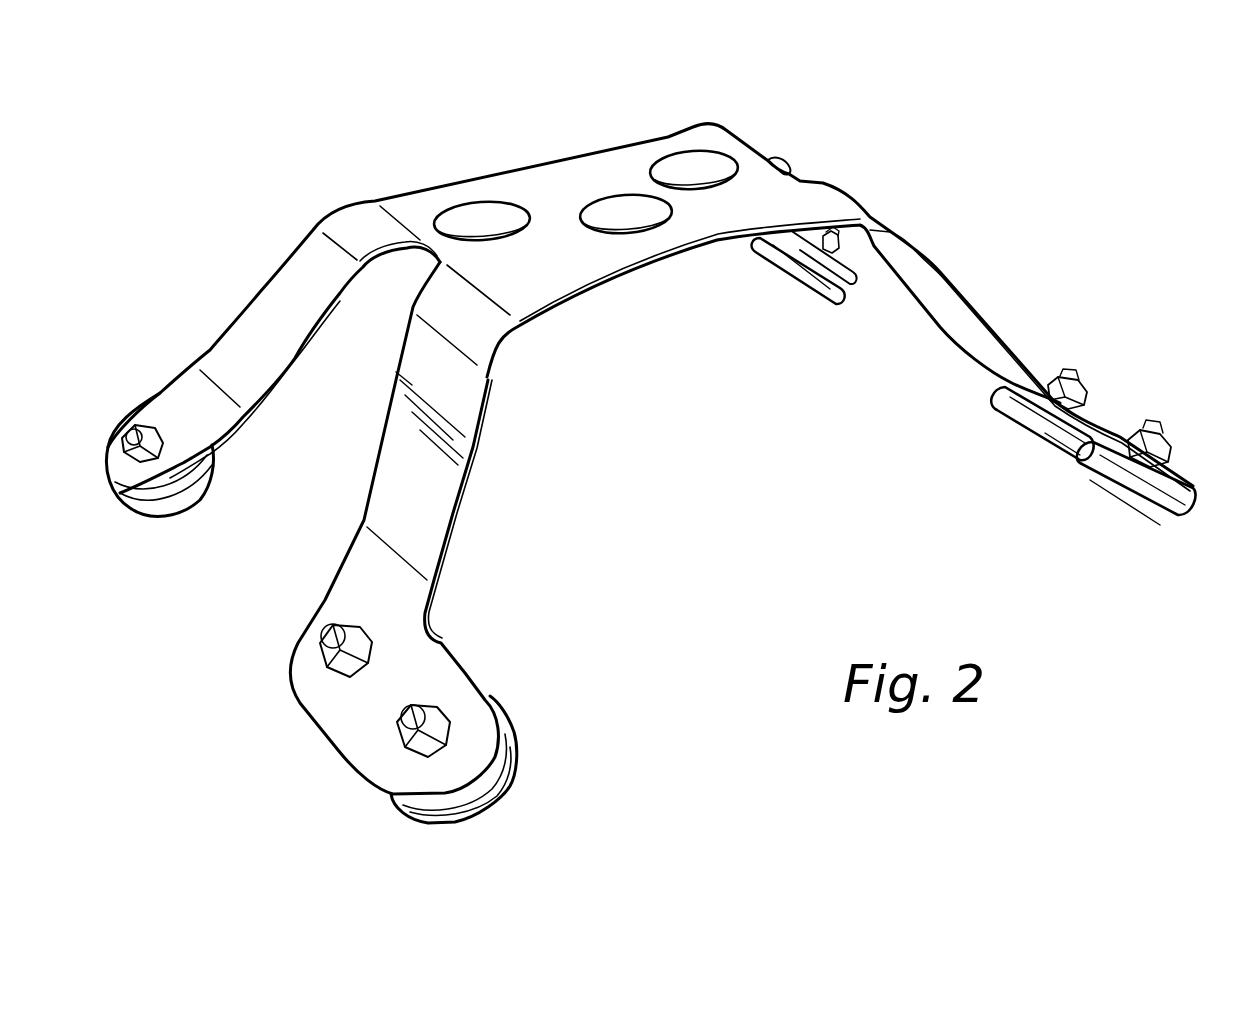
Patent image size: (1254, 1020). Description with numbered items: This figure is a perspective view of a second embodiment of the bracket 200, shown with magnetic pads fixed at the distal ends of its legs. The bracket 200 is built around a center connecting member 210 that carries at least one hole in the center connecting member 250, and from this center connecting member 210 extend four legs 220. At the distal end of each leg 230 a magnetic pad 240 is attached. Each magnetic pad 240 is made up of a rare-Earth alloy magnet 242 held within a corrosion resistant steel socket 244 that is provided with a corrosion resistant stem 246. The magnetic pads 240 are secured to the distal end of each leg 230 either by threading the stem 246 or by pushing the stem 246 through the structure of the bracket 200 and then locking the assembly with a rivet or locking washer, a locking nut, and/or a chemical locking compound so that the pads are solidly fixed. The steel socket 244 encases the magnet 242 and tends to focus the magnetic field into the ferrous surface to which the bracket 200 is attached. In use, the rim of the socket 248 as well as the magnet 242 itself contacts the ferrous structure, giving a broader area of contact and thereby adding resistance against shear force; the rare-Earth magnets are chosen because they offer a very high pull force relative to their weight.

The bracket 200 is at (323, 93).
The center connecting member 210 is at (700, 227).
The legs 220 is at (287, 300).
The distal end of each leg 230 is at (430, 670).
The magnetic pad 240 is at (1013, 408).
The rare-Earth alloy magnet 242 is at (1123, 510).
The corrosion resistant steel socket 244 is at (1170, 503).
The corrosion resistant stem 246 is at (1163, 428).
The rim of the socket 248 is at (1060, 452).
The hole in the center connecting member 250 is at (693, 170).